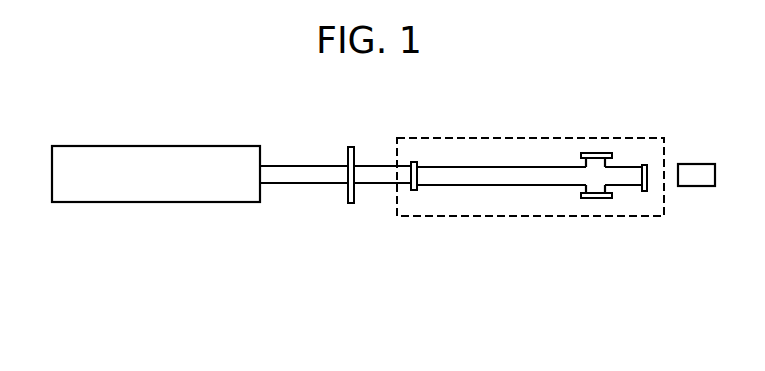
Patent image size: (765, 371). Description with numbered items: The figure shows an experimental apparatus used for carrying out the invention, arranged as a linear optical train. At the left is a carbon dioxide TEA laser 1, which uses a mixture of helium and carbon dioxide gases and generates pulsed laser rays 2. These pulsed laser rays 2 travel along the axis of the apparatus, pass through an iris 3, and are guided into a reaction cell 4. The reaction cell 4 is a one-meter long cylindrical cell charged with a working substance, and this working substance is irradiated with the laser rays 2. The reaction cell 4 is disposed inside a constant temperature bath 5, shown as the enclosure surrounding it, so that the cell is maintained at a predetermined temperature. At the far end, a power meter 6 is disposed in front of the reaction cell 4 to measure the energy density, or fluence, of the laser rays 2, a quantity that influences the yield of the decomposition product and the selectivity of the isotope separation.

The carbon dioxide TEA laser 1 is at (96, 203).
The pulsed laser rays 2 is at (288, 184).
The iris 3 is at (350, 204).
The reaction cell 4 is at (453, 186).
The constant temperature bath 5 is at (507, 217).
The power meter 6 is at (695, 187).